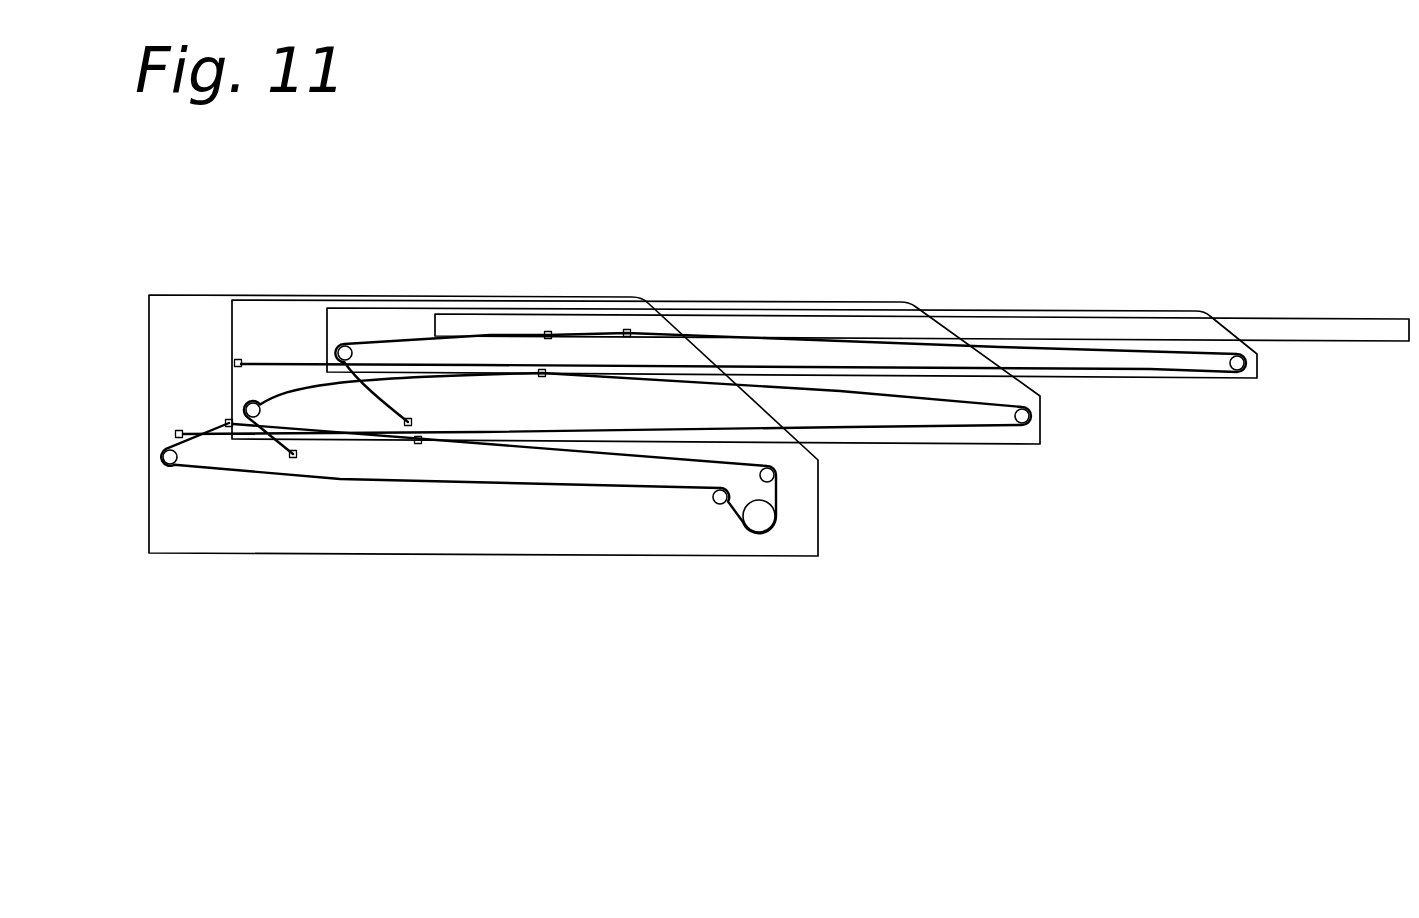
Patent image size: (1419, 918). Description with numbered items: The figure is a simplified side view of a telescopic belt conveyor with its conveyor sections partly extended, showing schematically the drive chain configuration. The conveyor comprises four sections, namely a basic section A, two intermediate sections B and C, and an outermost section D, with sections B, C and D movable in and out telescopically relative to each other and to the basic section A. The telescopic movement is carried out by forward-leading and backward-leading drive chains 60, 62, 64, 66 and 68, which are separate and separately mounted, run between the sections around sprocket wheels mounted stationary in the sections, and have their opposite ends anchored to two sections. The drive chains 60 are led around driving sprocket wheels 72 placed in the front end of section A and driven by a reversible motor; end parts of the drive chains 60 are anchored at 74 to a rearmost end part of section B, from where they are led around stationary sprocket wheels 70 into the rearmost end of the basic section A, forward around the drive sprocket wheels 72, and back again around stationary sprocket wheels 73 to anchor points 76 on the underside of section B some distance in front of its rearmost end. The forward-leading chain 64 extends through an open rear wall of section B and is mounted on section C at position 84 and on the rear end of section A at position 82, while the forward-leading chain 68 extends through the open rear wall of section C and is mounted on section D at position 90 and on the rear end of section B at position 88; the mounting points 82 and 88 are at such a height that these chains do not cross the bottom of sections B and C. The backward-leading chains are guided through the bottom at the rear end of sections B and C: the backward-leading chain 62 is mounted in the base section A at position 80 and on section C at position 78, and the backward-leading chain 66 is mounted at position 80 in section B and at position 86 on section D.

The drive chain 60 is at (212, 477).
The backward-leading chain 62 is at (253, 426).
The forward-leading chain 64 is at (923, 397).
The backward-leading chain 66 is at (405, 338).
The forward-leading chain 68 is at (863, 340).
The stationary sprocket wheel 70 is at (352, 342).
The driving sprocket wheel 72 is at (758, 532).
The stationary sprocket wheel 73 is at (776, 475).
The anchor point 74 is at (225, 422).
The anchor point 76 is at (408, 427).
The mounting position 78 is at (418, 444).
The mounting position 80 is at (293, 457).
The mounting position 82 is at (175, 437).
The mounting position 84 is at (542, 378).
The mounting position 86 is at (548, 330).
The mounting position 88 is at (234, 362).
The mounting position 90 is at (627, 328).
The basic section A is at (182, 310).
The intermediate section B is at (265, 313).
The intermediate section C is at (348, 312).
The outermost section D is at (470, 322).